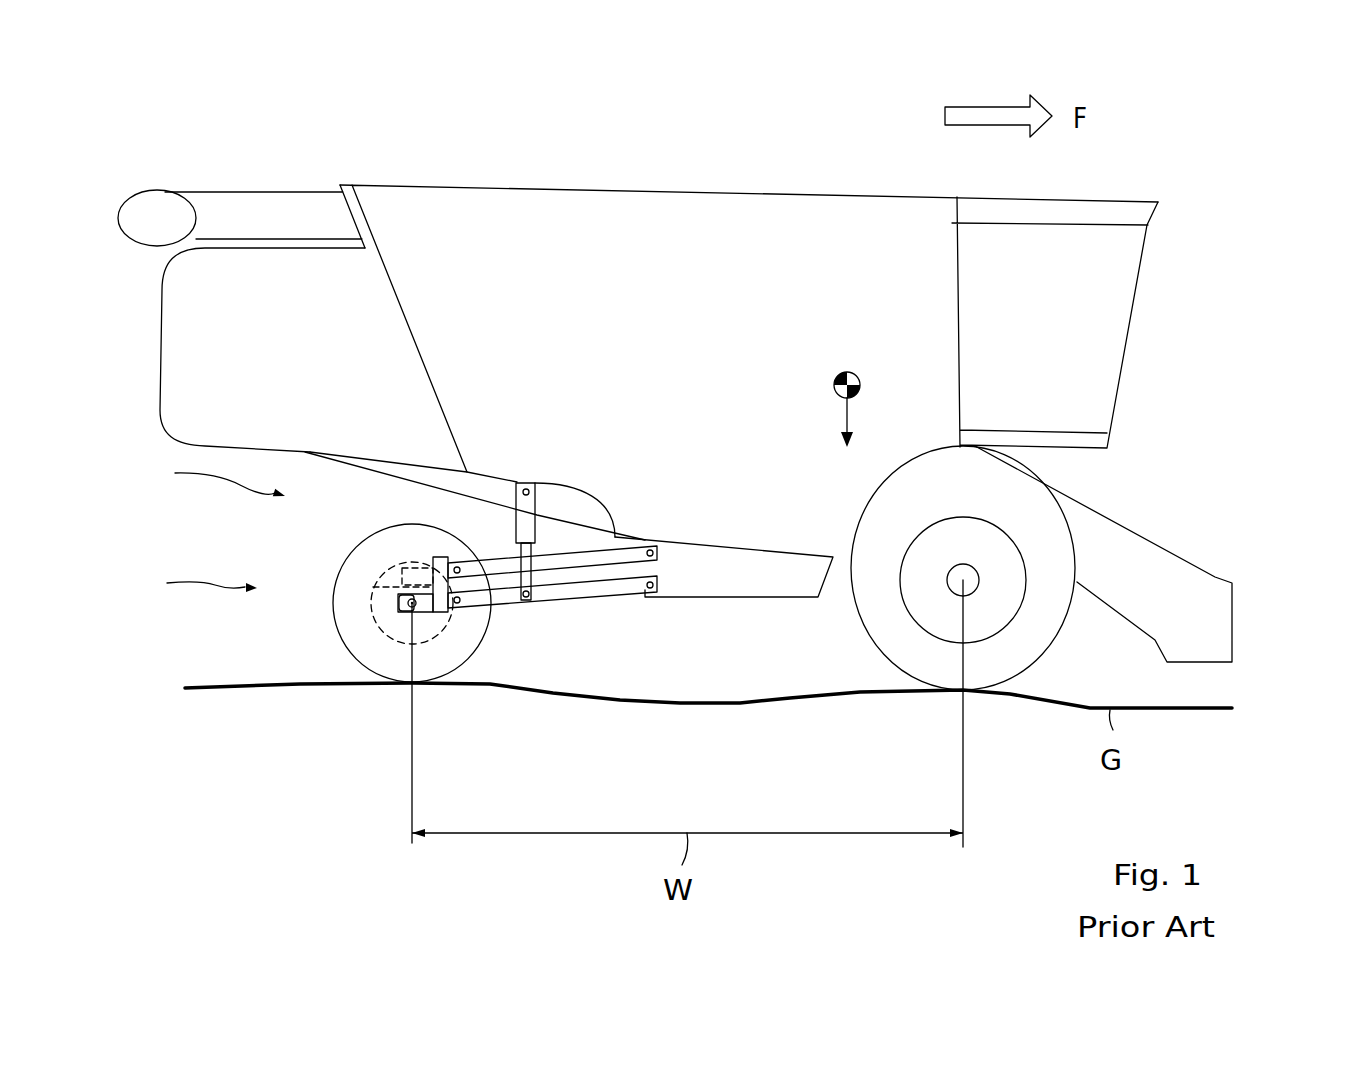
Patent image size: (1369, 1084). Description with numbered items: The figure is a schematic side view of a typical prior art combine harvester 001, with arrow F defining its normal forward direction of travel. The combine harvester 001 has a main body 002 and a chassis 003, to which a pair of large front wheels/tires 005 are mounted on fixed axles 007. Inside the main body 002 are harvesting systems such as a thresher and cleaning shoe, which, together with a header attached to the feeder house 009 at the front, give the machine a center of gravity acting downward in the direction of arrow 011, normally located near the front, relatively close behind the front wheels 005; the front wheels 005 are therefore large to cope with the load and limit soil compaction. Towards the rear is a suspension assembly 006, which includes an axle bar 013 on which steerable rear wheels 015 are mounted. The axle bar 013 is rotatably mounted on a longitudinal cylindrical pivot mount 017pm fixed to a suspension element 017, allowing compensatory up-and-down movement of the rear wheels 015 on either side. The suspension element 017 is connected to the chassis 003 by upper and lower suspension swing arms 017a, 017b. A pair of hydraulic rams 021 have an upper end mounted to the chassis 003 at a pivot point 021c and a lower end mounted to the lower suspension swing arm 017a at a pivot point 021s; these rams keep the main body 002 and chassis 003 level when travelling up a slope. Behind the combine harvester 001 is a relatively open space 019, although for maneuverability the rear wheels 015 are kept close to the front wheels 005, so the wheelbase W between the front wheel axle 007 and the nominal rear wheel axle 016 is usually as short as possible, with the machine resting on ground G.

The combine harvester 001 is at (638, 299).
The main body 002 is at (670, 228).
The chassis 003 is at (797, 572).
The front wheels/tires 005 is at (1033, 510).
The suspension assembly 006 is at (181, 590).
The fixed axles 007 is at (978, 573).
The feeder house 009 is at (1183, 590).
The arrow (center of gravity direction) 011 is at (850, 418).
The axle bar 013 is at (407, 610).
The rear wheels 015 is at (345, 613).
The nominal rear wheel axle 016 is at (412, 607).
The suspension element 017 is at (460, 636).
The lower suspension swing arm 017a is at (582, 590).
The upper suspension swing arm 017b is at (608, 558).
The pivot mount 017pm is at (400, 578).
The open space 019 is at (201, 479).
The hydraulic rams 021 is at (627, 482).
The pivot point (upper ram end) 021c is at (532, 483).
The pivot point (lower ram end) 021s is at (530, 588).